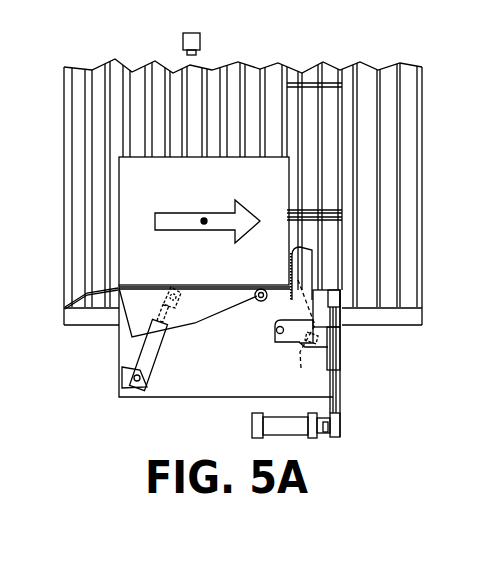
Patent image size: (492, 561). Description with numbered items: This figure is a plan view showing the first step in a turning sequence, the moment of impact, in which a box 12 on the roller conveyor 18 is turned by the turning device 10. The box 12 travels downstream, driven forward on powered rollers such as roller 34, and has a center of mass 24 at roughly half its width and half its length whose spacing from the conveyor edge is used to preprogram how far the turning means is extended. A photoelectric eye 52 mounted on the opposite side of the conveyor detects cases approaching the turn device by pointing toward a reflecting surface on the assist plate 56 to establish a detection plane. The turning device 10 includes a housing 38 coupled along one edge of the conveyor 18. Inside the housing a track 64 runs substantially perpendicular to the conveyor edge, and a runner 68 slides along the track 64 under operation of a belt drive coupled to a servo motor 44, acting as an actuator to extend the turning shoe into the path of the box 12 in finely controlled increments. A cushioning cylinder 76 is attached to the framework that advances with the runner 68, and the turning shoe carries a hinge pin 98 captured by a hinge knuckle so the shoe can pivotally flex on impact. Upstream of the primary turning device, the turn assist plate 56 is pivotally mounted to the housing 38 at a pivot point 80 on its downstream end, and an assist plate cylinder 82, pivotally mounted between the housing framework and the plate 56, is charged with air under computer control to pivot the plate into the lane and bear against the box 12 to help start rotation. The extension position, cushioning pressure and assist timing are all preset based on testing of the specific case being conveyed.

The turning device 10 is at (162, 413).
The box 12 is at (217, 200).
The roller conveyor 18 is at (430, 130).
The center of mass 24 is at (204, 221).
The roller 34 is at (395, 188).
The housing 38 is at (147, 397).
The motor 44 is at (252, 422).
The photoelectric eye 52 is at (183, 42).
The turn assist plate 56 is at (197, 322).
The track 64 is at (341, 403).
The runner 68 is at (333, 350).
The cushioning cylinder 76 is at (304, 320).
The pivot point 80 is at (253, 300).
The assist plate cylinder 82 is at (137, 348).
The hinge pin 98 is at (283, 344).